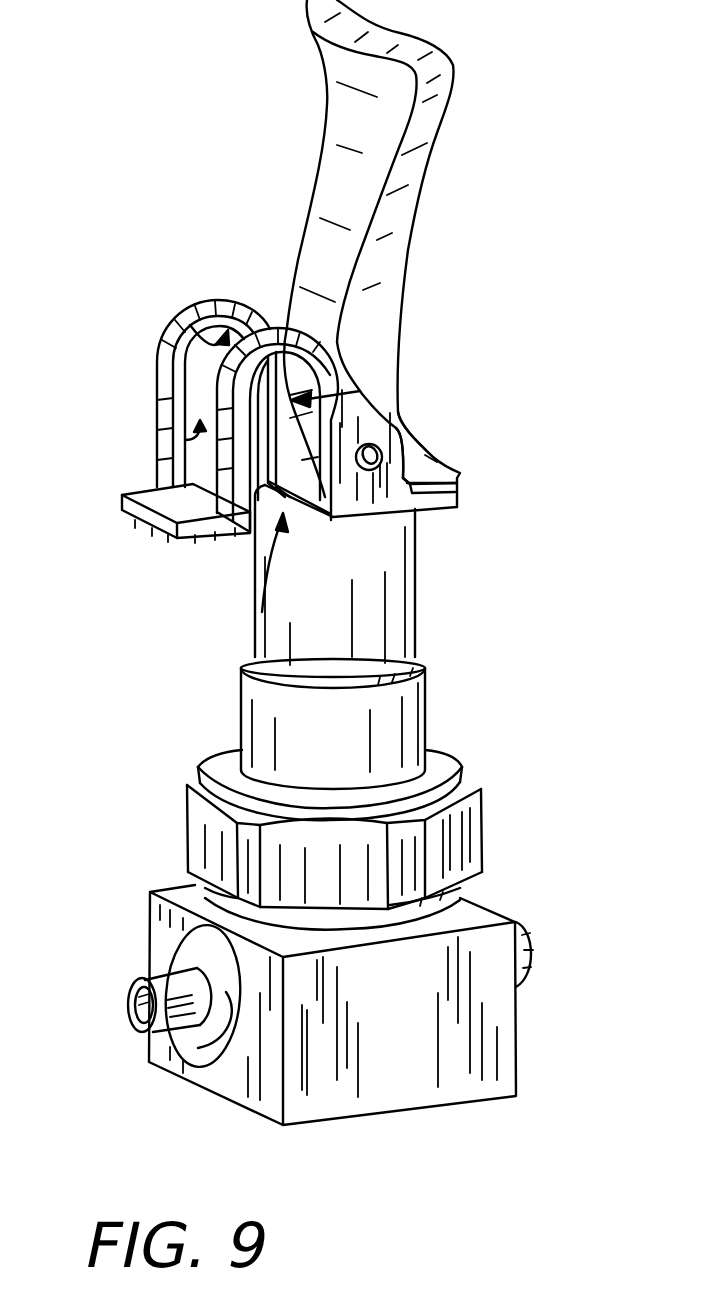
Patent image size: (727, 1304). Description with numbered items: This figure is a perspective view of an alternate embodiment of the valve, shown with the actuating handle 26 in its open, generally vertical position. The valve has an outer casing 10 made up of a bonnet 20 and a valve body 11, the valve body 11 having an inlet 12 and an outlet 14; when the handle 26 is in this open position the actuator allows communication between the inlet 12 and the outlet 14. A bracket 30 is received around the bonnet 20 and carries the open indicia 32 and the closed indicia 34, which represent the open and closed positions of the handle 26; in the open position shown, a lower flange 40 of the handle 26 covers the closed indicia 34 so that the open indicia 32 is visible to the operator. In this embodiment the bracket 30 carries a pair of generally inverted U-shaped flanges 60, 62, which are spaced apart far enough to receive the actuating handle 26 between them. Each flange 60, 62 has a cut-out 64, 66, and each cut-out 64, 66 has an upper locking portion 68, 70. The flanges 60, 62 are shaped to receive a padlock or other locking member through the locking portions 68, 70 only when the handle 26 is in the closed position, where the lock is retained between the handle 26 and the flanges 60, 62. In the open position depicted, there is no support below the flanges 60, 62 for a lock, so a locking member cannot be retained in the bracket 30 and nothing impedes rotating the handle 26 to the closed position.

The outer casing 10 is at (329, 707).
The valve body 11 is at (413, 1058).
The inlet 12 is at (140, 983).
The outlet 14 is at (518, 940).
The bonnet 20 is at (280, 607).
The actuating handle 26 is at (415, 170).
The bracket 30 is at (370, 517).
The open indicia 32 is at (155, 487).
The closed indicia 34 is at (427, 467).
The lower flange 40 is at (420, 450).
The U-shaped flange 60 is at (243, 410).
The U-shaped flange 62 is at (233, 300).
The cut-out 64 is at (263, 577).
The cut-out 66 is at (185, 440).
The upper locking portion 68 is at (360, 391).
The upper locking portion 70 is at (190, 325).